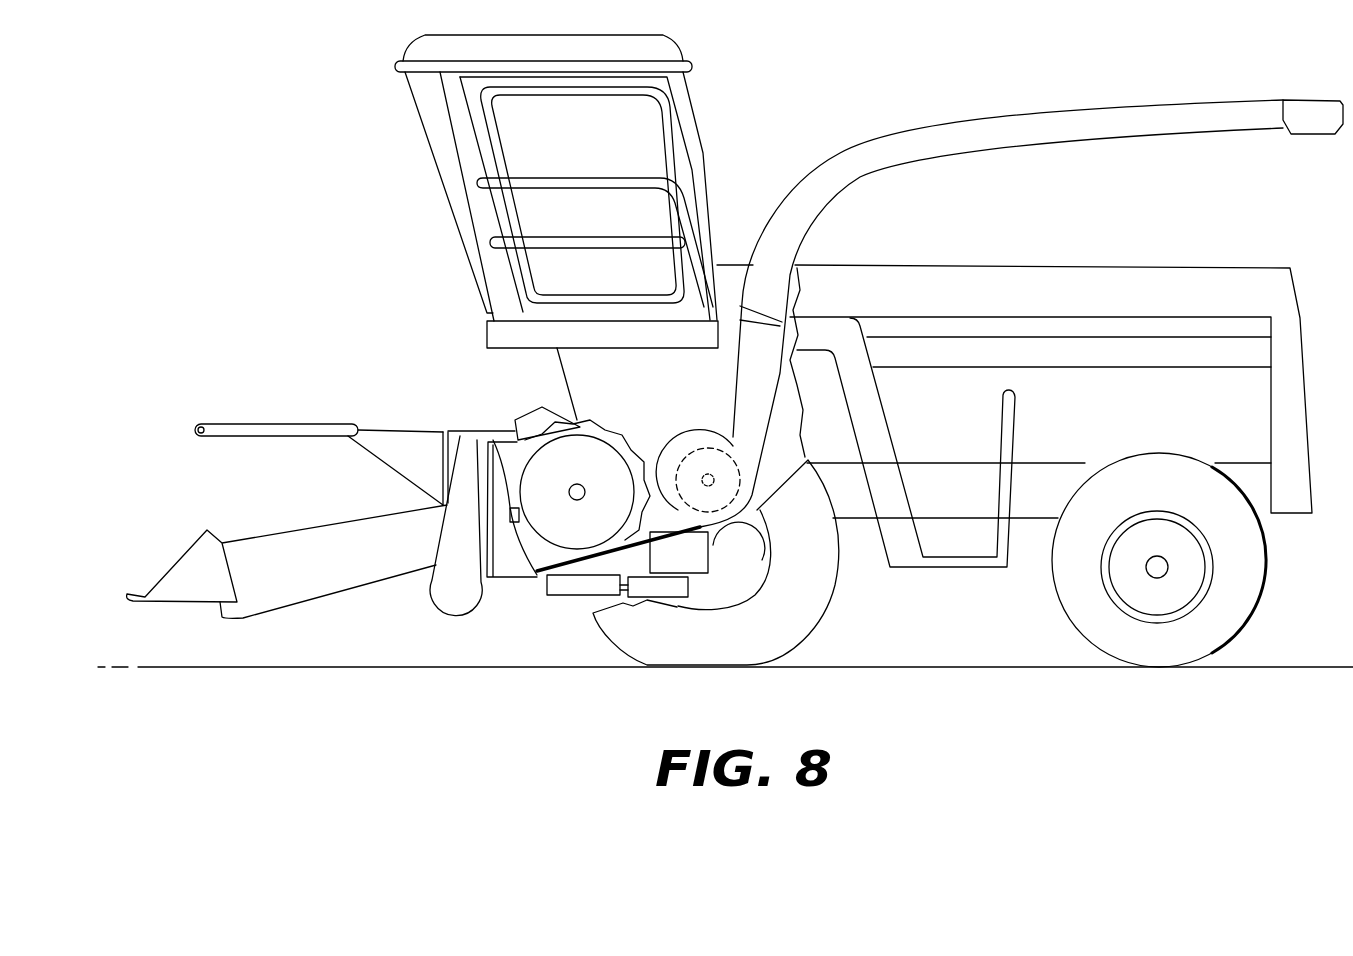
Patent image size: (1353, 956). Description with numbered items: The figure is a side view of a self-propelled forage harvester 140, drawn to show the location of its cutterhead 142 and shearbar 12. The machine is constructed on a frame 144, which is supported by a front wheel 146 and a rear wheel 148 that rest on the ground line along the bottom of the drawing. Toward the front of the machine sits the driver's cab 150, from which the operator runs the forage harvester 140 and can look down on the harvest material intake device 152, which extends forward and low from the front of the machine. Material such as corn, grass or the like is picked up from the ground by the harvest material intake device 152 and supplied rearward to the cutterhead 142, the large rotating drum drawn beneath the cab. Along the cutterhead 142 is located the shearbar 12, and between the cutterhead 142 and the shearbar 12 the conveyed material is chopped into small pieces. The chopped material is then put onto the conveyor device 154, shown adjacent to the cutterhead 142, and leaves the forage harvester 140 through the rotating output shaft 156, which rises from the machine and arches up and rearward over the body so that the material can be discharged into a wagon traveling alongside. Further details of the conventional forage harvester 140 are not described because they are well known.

The shearbar 12 is at (493, 440).
The forage harvester 140 is at (377, 337).
The cutterhead 142 is at (553, 550).
The frame 144 is at (850, 527).
The front wheel 146 is at (807, 623).
The rear wheel 148 is at (1267, 603).
The driver's cab 150 is at (445, 175).
The harvest material intake device 152 is at (363, 592).
The conveyor device 154 is at (703, 438).
The rotating output shaft 156 is at (917, 130).